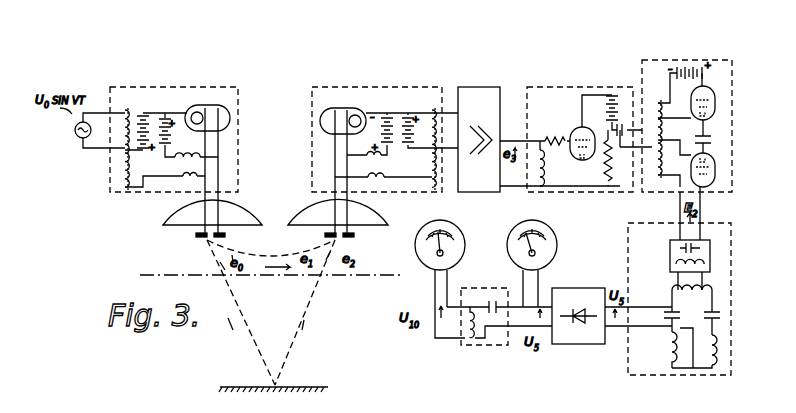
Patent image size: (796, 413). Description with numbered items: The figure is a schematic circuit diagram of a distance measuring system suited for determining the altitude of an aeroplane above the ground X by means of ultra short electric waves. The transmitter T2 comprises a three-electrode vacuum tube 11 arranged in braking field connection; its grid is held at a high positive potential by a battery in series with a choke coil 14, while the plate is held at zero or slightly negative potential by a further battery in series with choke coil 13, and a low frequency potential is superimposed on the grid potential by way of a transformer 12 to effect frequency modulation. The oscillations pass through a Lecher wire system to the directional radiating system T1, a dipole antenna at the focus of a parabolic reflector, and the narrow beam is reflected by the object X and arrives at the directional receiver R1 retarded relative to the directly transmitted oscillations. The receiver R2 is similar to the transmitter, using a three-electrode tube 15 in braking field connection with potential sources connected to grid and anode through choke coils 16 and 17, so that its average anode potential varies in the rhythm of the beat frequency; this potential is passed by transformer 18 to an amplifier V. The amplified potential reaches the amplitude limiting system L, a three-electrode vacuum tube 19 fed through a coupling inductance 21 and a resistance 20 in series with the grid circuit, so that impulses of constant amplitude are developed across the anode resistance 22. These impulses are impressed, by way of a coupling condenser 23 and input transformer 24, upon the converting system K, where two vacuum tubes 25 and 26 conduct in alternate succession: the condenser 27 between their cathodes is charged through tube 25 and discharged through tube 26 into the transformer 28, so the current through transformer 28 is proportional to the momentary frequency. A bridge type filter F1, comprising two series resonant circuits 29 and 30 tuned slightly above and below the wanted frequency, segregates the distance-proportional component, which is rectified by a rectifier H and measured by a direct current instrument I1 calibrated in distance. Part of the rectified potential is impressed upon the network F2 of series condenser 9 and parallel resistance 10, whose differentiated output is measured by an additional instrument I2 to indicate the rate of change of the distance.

The series condenser 9 is at (488, 306).
The parallel resistance 10 is at (468, 330).
The three-electrode vacuum tube 11 is at (207, 159).
The transformer 12 is at (124, 150).
The choke coil 13 is at (187, 146).
The choke coil 14 is at (185, 178).
The three-electrode tube 15 is at (338, 112).
The choke coil 16 is at (378, 158).
The choke coil 17 is at (378, 180).
The transformer 18 is at (436, 155).
The three-electrode vacuum tube 19 is at (578, 128).
The resistance 20 is at (551, 130).
The coupling inductance 21 is at (555, 168).
The anode resistance 22 is at (599, 168).
The coupling condenser 23 is at (621, 124).
The input transformer 24 is at (656, 160).
The vacuum tube 25 is at (714, 95).
The vacuum tube 26 is at (712, 160).
The condenser 27 is at (708, 136).
The transformer 28 is at (672, 270).
The series resonant circuit 29 is at (722, 350).
The series resonant circuit 30 is at (668, 322).
The directional radiating system T1 is at (207, 242).
The transmitter T2 is at (158, 87).
The directional receiver R1 is at (358, 242).
The receiver R2 is at (370, 87).
The amplifier V is at (502, 45).
The amplitude limiting system L is at (578, 87).
The converting system K is at (695, 60).
The rectifier H is at (580, 345).
The filter F1 is at (672, 375).
The network F2 is at (479, 345).
The direct current instrument I1 is at (557, 247).
The additional instrument I2 is at (465, 247).
The ground X is at (282, 387).